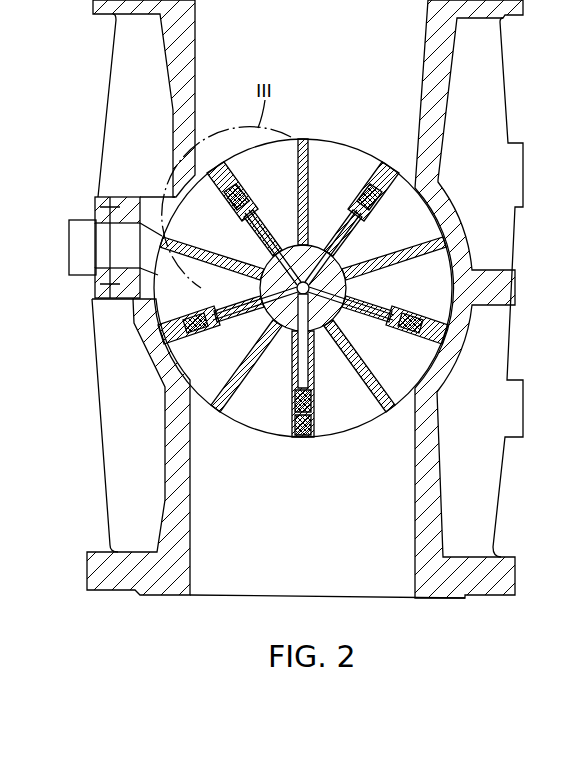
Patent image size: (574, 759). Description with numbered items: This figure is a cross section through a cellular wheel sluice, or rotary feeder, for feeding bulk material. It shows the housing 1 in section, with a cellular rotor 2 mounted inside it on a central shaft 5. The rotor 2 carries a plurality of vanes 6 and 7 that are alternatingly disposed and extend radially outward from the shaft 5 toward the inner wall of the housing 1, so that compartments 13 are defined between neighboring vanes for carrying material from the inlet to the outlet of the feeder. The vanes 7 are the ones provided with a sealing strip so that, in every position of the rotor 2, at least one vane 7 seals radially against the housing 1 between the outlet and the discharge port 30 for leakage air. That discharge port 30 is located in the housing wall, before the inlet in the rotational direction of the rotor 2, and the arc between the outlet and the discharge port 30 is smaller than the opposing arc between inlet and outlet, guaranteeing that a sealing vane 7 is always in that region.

The housing 1 is at (438, 65).
The cellular rotor 2 is at (267, 440).
The shaft 5 is at (316, 243).
The vane 6 is at (245, 380).
The vane 7 is at (312, 385).
The compartment 13 is at (281, 183).
The discharge port for leakage air 30 is at (138, 270).